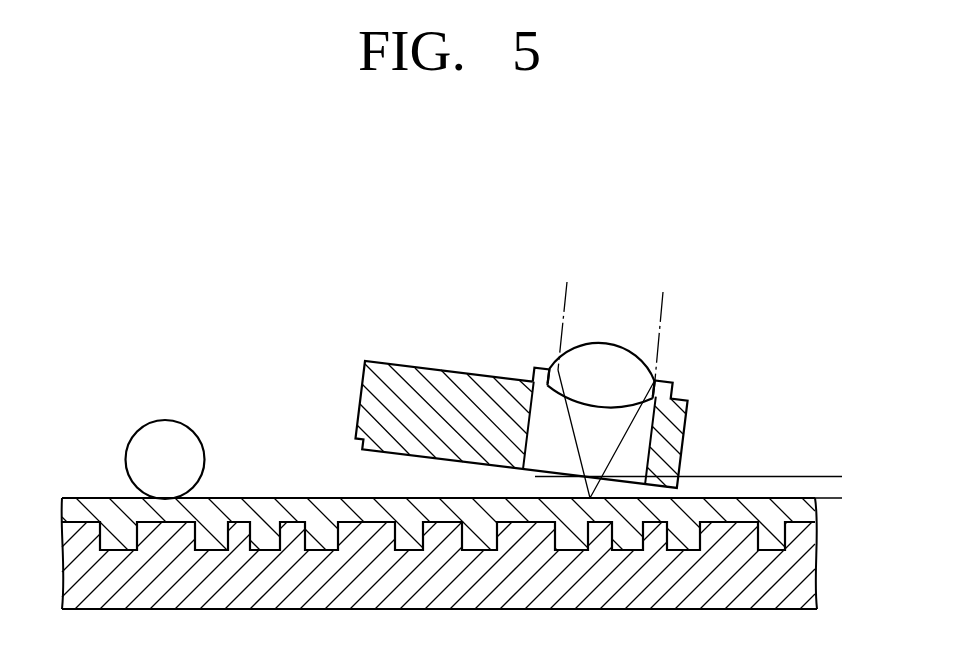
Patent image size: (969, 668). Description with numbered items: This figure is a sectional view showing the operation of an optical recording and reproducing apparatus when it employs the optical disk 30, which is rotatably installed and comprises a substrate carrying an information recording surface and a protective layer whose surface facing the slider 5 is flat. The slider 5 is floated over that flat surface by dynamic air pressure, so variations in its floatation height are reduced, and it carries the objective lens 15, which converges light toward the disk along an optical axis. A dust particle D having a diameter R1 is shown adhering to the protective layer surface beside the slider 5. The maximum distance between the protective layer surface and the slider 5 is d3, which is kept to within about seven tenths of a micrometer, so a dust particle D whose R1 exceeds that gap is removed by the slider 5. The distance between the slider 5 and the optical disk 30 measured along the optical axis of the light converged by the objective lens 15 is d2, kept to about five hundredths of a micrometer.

The optical disk 30 is at (64, 486).
The slider 5 is at (682, 447).
The objective lens 15 is at (668, 381).
The light beam L is at (662, 313).
The dust particle D is at (140, 429).
The diameter of the dust particle R1 is at (165, 421).
The maximum distance between the protective layer surface and the slider d3 is at (360, 450).
The distance between the slider and the optical disk along the optical axis d2 is at (842, 453).